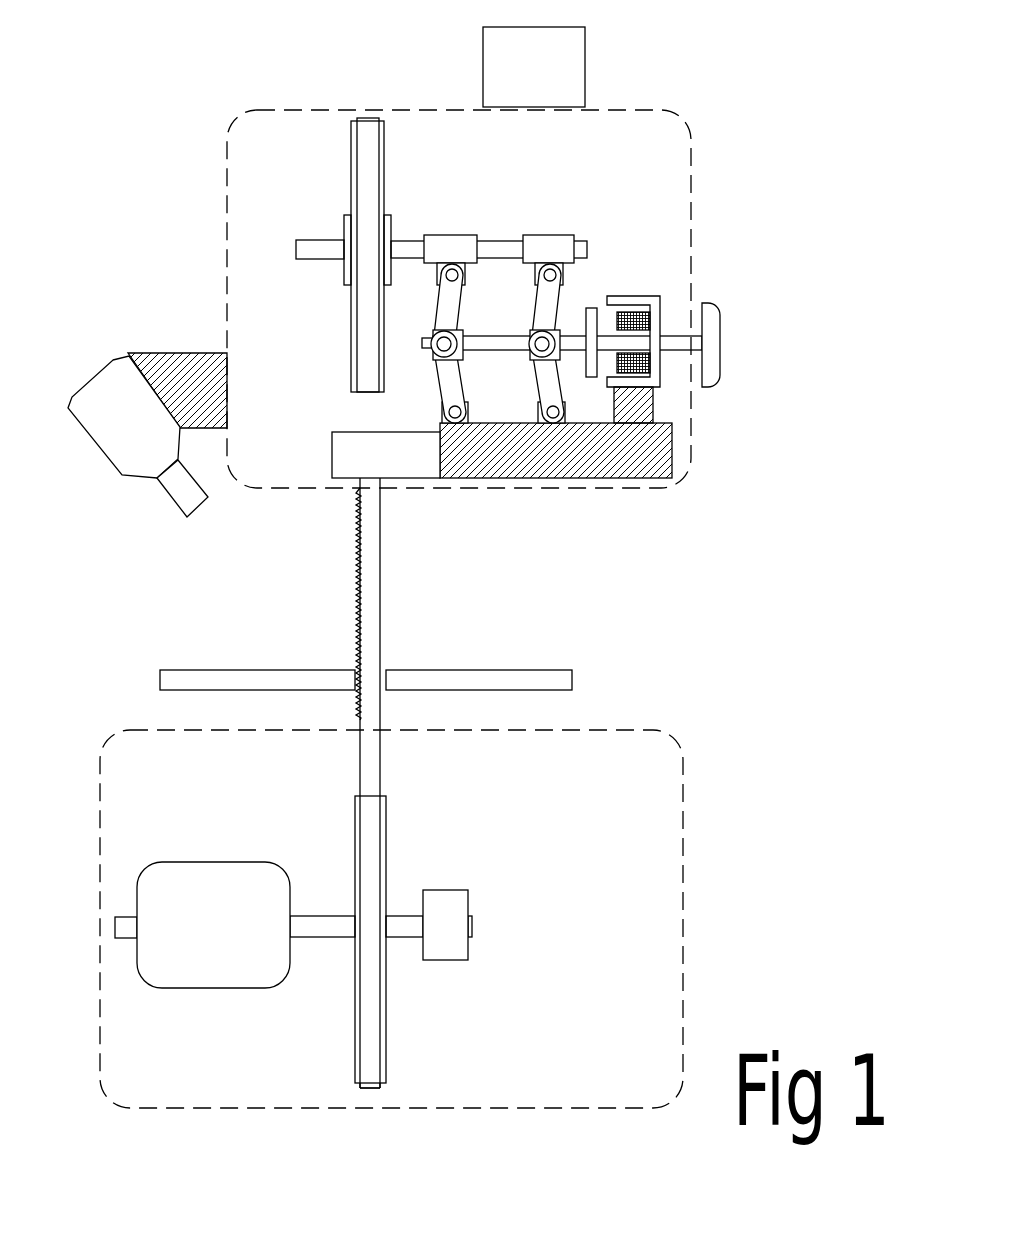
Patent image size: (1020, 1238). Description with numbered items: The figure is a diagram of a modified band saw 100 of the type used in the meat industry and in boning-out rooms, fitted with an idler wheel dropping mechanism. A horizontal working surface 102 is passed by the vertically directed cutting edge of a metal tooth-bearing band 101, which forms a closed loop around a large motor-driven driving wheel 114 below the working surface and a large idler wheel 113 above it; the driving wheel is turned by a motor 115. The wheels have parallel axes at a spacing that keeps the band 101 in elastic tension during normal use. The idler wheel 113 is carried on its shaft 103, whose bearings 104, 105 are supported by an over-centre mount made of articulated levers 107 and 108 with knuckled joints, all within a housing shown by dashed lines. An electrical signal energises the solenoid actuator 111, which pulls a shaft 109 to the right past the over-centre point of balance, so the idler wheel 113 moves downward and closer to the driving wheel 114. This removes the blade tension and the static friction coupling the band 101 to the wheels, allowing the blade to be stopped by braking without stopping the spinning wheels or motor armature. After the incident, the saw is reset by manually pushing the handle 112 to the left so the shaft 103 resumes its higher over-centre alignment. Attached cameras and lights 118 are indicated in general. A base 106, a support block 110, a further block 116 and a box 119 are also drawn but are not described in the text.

The modified band saw 100 is at (112, 118).
The metal tooth-bearing band 101 is at (355, 548).
The horizontal working surface 102 is at (485, 668).
The shaft 103 is at (330, 240).
The bearing 104 is at (436, 235).
The bearing 105 is at (553, 235).
The base 106 is at (583, 478).
The articulated lever 107 is at (437, 288).
The articulated lever 108 is at (437, 380).
The shaft 109 is at (582, 340).
The support block 110 is at (330, 462).
The solenoid actuator 111 is at (635, 293).
The handle 112 is at (720, 318).
The idler wheel 113 is at (343, 133).
The driving wheel 114 is at (348, 830).
The motor 115 is at (225, 853).
The encoder 116 is at (447, 890).
The cameras and lights 118 is at (85, 378).
The controller 119 is at (585, 95).